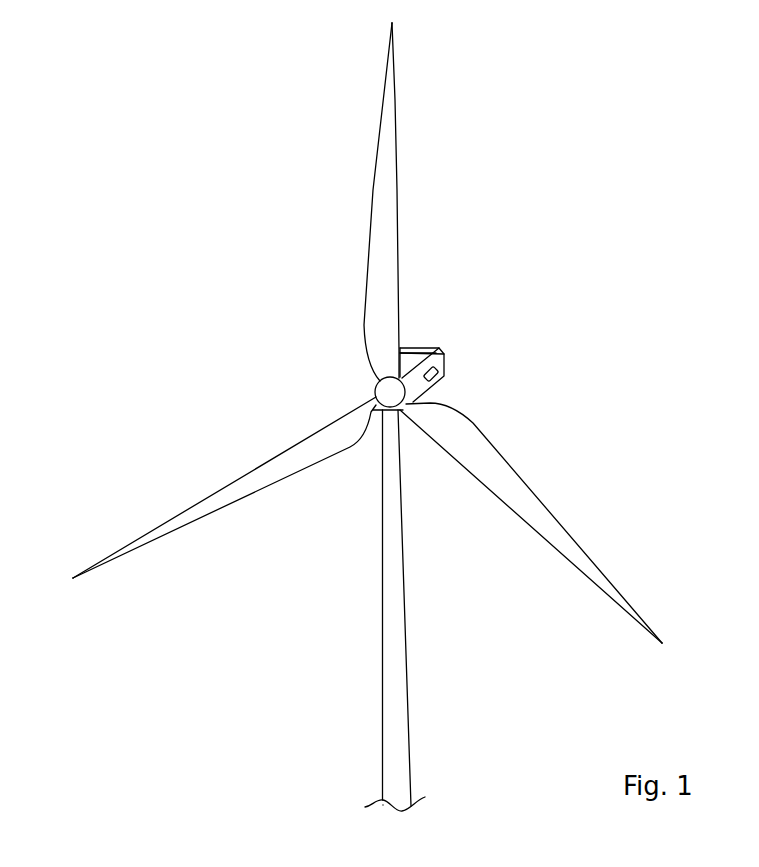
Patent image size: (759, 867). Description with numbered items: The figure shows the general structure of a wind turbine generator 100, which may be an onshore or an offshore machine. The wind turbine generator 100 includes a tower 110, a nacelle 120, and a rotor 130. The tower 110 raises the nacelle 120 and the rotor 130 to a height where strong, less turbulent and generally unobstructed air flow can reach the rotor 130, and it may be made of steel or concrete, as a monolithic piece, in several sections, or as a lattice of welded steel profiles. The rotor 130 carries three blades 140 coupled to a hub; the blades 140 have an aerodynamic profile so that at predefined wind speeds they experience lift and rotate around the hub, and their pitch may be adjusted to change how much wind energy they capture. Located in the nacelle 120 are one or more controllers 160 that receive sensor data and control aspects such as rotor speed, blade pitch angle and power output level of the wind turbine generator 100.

The wind turbine generator 100 is at (684, 197).
The tower 110 is at (390, 673).
The nacelle 120 is at (373, 375).
The rotor 130 is at (437, 373).
The blade 140 is at (368, 288).
The controller 160 is at (444, 370).